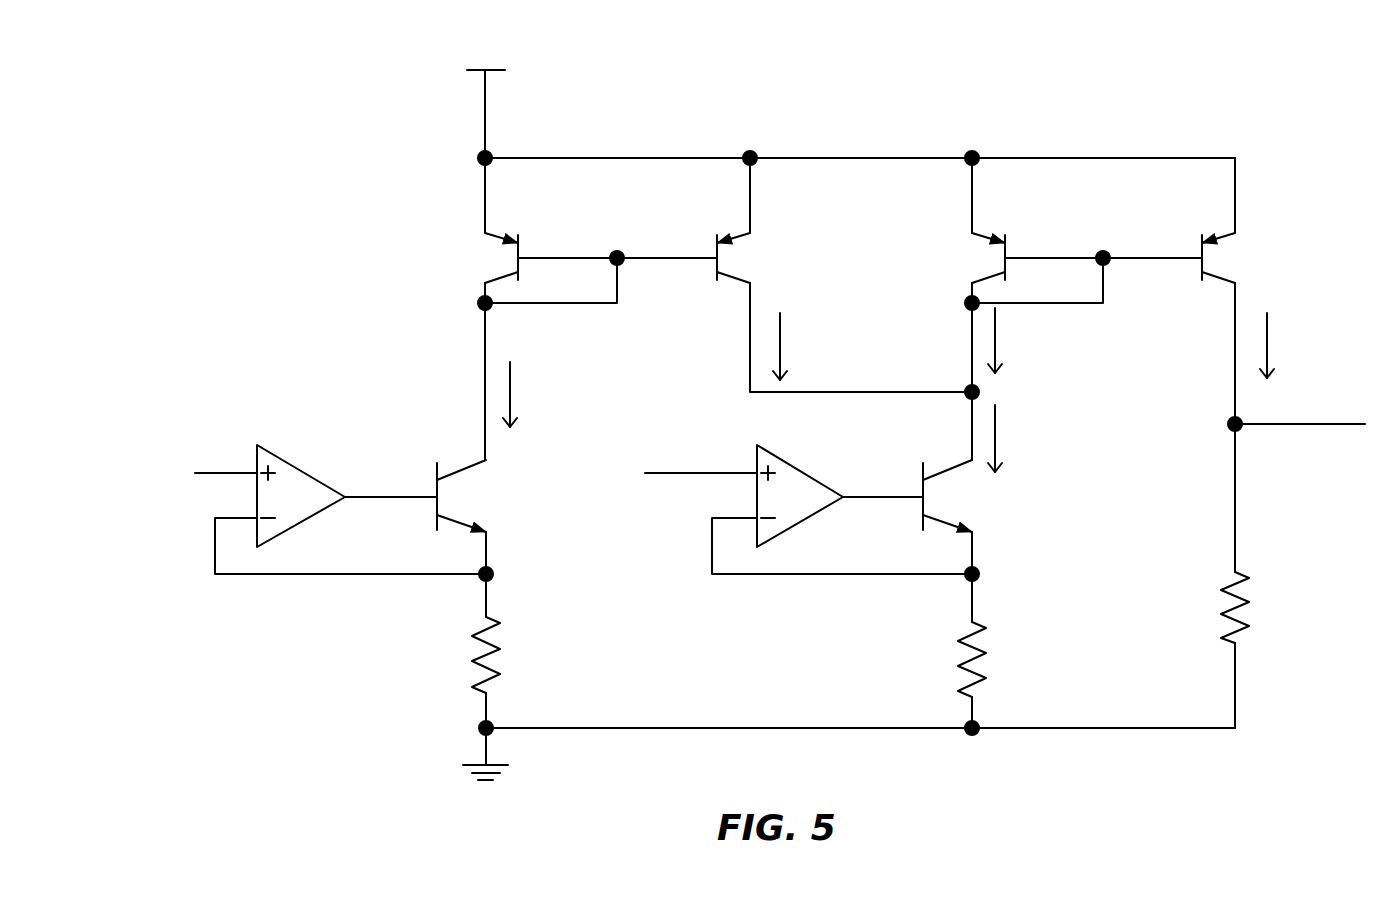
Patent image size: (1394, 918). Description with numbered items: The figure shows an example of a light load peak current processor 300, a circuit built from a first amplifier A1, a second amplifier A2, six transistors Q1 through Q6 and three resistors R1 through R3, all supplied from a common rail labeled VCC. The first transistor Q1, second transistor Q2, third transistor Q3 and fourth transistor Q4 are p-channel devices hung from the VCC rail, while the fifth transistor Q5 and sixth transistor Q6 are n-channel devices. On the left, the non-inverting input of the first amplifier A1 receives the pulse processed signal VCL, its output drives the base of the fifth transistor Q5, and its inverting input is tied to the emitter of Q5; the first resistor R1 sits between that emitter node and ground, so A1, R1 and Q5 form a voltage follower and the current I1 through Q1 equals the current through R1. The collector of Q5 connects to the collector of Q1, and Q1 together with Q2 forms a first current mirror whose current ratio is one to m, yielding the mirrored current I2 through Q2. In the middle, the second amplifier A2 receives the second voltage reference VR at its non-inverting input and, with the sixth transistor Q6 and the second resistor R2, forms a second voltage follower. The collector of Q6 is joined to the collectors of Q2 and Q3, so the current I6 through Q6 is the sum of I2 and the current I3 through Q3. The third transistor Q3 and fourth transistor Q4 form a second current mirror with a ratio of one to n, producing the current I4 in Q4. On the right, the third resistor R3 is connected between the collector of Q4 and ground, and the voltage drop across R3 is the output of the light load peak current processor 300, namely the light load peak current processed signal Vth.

The light load peak current processor 300 is at (372, 152).
The first transistor Q1 is at (509, 309).
The second transistor Q2 is at (833, 278).
The third transistor Q3 is at (995, 309).
The fourth transistor Q4 is at (1211, 365).
The fifth transistor Q5 is at (474, 538).
The sixth transistor Q6 is at (947, 541).
The first amplifier A1 is at (354, 513).
The second amplifier A2 is at (845, 513).
The first resistor R1 is at (506, 672).
The second resistor R2 is at (993, 675).
The third resistor R3 is at (1257, 650).
The first current I1 is at (526, 394).
The second current I2 is at (792, 346).
The third current I3 is at (1011, 340).
The fourth current I4 is at (1281, 345).
The sixth current I6 is at (1010, 438).
The supply voltage VCC is at (510, 114).
The pulse processed signal VCL is at (222, 454).
The second voltage reference VR is at (701, 454).
The light load peak current processed signal Vth is at (1300, 408).